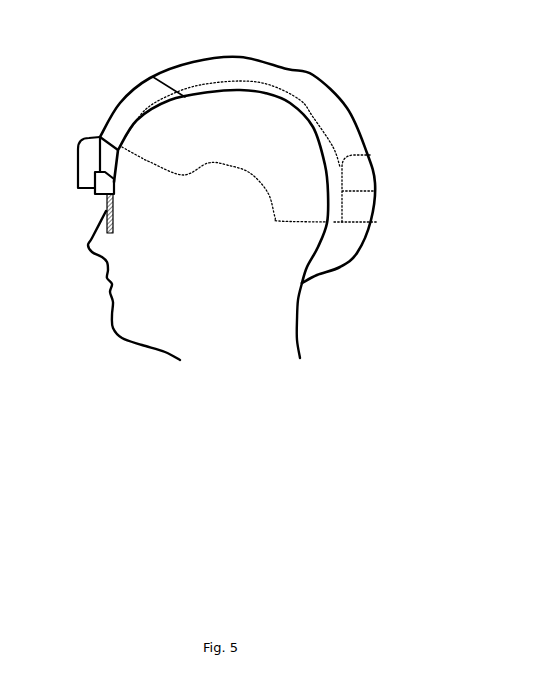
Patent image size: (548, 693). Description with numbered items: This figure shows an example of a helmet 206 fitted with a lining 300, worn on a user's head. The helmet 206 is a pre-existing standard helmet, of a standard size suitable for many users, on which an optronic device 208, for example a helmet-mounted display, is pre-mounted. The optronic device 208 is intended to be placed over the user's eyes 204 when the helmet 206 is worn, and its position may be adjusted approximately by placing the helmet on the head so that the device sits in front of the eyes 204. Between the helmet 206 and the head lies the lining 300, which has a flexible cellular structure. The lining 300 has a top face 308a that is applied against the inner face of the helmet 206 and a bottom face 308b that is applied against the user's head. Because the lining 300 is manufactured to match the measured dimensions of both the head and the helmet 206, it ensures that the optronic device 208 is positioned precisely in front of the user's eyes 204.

The user's eyes 204 is at (137, 207).
The helmet 206 is at (313, 73).
The optronic device 208 is at (80, 190).
The lining 300 is at (371, 152).
The top face 308a is at (377, 193).
The bottom face 308b is at (153, 77).